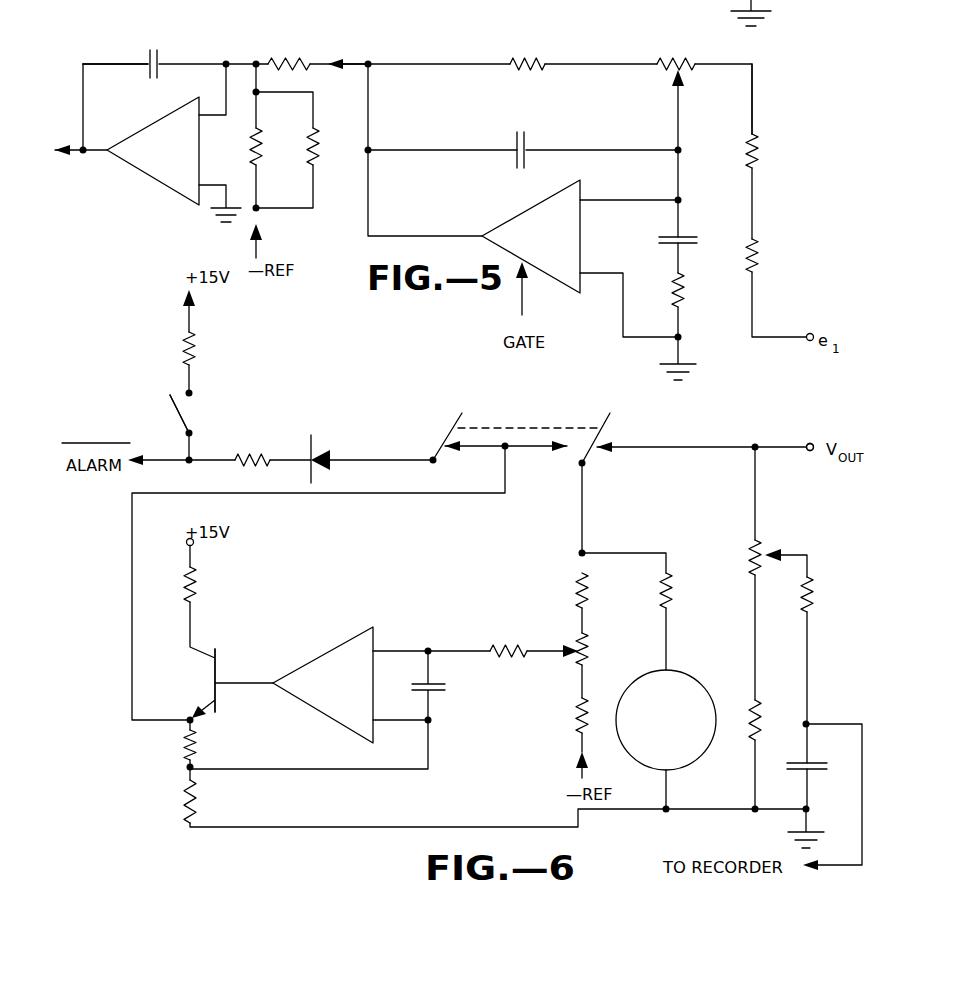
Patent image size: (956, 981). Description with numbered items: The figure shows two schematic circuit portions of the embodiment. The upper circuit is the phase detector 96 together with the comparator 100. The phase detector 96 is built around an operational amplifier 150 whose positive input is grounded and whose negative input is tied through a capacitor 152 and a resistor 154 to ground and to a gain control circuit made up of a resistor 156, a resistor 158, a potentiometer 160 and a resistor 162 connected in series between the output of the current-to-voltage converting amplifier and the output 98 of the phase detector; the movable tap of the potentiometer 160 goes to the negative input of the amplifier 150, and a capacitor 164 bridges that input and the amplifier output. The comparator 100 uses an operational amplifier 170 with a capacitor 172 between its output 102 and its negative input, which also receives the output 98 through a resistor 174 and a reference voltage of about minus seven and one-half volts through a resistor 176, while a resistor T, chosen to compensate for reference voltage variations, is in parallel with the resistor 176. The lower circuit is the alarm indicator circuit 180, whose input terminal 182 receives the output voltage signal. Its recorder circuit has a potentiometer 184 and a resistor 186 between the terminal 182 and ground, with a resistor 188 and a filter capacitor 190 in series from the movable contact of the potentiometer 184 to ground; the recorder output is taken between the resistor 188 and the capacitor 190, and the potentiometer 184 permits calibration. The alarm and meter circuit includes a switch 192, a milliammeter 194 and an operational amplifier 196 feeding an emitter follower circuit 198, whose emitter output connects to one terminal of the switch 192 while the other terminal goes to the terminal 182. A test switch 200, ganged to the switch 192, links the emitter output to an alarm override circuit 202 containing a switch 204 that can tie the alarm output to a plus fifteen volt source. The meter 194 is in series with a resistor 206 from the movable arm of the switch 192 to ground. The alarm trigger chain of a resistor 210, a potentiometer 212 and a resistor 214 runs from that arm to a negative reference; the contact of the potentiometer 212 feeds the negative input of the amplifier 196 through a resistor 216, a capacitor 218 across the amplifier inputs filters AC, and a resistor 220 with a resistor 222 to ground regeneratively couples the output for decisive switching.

In FIG. 5, the phase detector 96 is at (788, 82).
In FIG. 5, the output of the phase detector 98 is at (336, 60).
In FIG. 5, the comparator 100 is at (115, 22).
In FIG. 5, the output of the comparator 102 is at (83, 156).
In FIG. 5, the operational amplifier 150 is at (530, 205).
In FIG. 5, the capacitor 152 is at (688, 238).
In FIG. 5, the resistor 154 is at (684, 287).
In FIG. 5, the resistor 156 is at (758, 257).
In FIG. 5, the resistor 158 is at (758, 149).
In FIG. 5, the potentiometer 160 is at (688, 63).
In FIG. 5, the resistor 162 is at (525, 62).
In FIG. 5, the capacitor 164 is at (526, 140).
In FIG. 5, the operational amplifier 170 is at (163, 190).
In FIG. 5, the capacitor 172 is at (160, 52).
In FIG. 5, the resistor 174 is at (281, 60).
In FIG. 5, the resistor 176 is at (252, 147).
In FIG. 5, the resistor T is at (320, 147).
In FIG. 6, the alarm indicator circuit 180 is at (110, 794).
In FIG. 6, the input terminal 182 is at (812, 442).
In FIG. 6, the potentiometer 184 is at (757, 547).
In FIG. 6, the resistor 186 is at (760, 716).
In FIG. 6, the resistor 188 is at (812, 590).
In FIG. 6, the filter capacitor 190 is at (812, 762).
In FIG. 6, the switch 192 is at (604, 430).
In FIG. 6, the milliammeter 194 is at (700, 682).
In FIG. 6, the operational amplifier 196 is at (355, 630).
In FIG. 6, the emitter follower circuit 198 is at (238, 635).
In FIG. 6, the test switch 200 is at (450, 426).
In FIG. 6, the alarm override circuit 202 is at (226, 359).
In FIG. 6, the switch 204 is at (181, 411).
In FIG. 6, the resistor 206 is at (673, 590).
In FIG. 6, the resistor 210 is at (589, 585).
In FIG. 6, the potentiometer 212 is at (589, 648).
In FIG. 6, the resistor 214 is at (587, 709).
In FIG. 6, the resistor 216 is at (500, 650).
In FIG. 6, the capacitor 218 is at (440, 692).
In FIG. 6, the resistor 220 is at (198, 743).
In FIG. 6, the resistor 222 is at (198, 793).